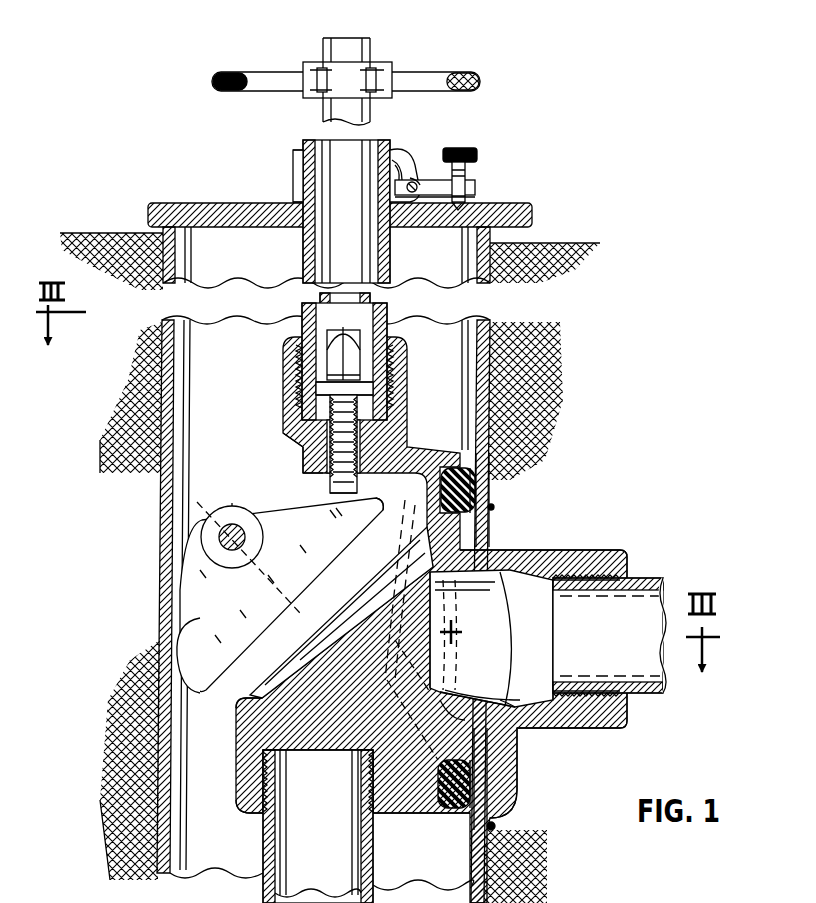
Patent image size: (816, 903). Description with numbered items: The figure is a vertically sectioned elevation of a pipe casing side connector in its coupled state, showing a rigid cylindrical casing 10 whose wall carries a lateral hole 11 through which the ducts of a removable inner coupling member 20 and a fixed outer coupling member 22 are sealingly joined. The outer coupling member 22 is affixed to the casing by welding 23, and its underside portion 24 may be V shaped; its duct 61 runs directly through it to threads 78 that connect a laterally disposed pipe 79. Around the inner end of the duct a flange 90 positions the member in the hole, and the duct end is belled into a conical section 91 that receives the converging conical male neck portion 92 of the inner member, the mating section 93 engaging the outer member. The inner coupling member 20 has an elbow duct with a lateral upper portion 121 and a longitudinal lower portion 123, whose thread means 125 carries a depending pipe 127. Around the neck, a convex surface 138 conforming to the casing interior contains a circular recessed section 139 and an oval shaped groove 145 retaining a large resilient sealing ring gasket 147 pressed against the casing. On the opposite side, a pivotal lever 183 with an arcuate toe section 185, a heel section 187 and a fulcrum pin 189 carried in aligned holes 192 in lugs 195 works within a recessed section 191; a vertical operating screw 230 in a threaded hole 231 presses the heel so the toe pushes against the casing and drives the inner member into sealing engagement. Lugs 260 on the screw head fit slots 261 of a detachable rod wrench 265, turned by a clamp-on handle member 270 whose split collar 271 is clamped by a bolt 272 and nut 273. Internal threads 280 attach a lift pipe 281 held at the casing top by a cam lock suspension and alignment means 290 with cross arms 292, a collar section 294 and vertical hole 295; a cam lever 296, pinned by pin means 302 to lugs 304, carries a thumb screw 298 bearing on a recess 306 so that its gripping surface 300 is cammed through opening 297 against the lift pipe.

The casing 10 is at (168, 534).
The lateral hole 11 is at (480, 539).
The inner coupling member 20 is at (223, 747).
The outer coupling member 22 is at (583, 548).
The welding 23 is at (494, 506).
The underside portion 24 is at (517, 763).
The duct 61 is at (532, 639).
The threads 78 is at (611, 687).
The pipe 79 is at (655, 579).
The flange 90 is at (477, 683).
The conical section 91 is at (534, 640).
The conical male neck portion 92 is at (457, 630).
The mating section 93 is at (488, 676).
The upper duct portion 121 is at (430, 651).
The lower duct portion 123 is at (318, 734).
The thread means 125 is at (370, 805).
The depending pipe 127 is at (268, 852).
The convex surface 138 is at (390, 684).
The recessed section 139 is at (430, 546).
The oval shaped groove 145 is at (449, 467).
The sealing ring gasket 147 is at (472, 486).
The pivotal lever 183 is at (235, 685).
The toe section 185 is at (190, 628).
The heel section 187 is at (374, 497).
The fulcrum pin 189 is at (246, 536).
The recessed section 191 is at (317, 492).
The aligned holes 192 is at (237, 544).
The lug 195 is at (232, 505).
The operating screw 230 is at (326, 474).
The threaded hole 231 is at (327, 451).
The lugs 260 is at (312, 329).
The slots 261 is at (373, 368).
The rod wrench 265 is at (370, 29).
The clamp-on handle member 270 is at (436, 71).
The split collar 271 is at (310, 95).
The bolt 272 is at (322, 61).
The nut 273 is at (372, 66).
The internal threads 280 is at (373, 392).
The lift pipe 281 is at (312, 141).
The cam lock suspension and alignment means 290 is at (295, 161).
The cross arms 292 is at (170, 202).
The collar section 294 is at (295, 174).
The vertical hole 295 is at (303, 187).
The cam lever 296 is at (478, 183).
The opening 297 is at (398, 167).
The thumb screw 298 is at (478, 152).
The gripping surface 300 is at (398, 163).
The pin means 302 is at (418, 179).
The lugs 304 is at (415, 176).
The recess 306 is at (478, 200).